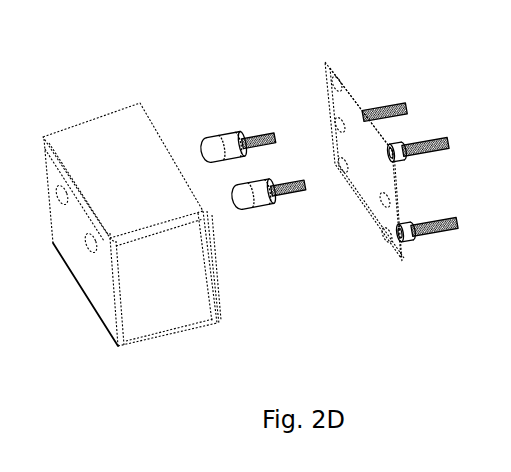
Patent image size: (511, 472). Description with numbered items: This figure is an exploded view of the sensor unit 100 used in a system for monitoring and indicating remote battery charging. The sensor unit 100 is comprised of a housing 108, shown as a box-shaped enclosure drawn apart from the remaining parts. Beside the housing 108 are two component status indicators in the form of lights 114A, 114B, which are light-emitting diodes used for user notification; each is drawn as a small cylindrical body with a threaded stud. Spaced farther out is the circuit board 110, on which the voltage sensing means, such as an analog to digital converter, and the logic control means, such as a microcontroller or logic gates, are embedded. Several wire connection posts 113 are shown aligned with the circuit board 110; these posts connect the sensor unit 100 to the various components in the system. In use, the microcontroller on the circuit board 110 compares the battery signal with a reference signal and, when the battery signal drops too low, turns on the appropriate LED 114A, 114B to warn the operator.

The sensor unit 100 is at (190, 74).
The housing 108 is at (113, 131).
The circuit board 110 is at (363, 180).
The wire connection posts 113 is at (457, 222).
The light 114A is at (228, 143).
The light 114B is at (257, 200).